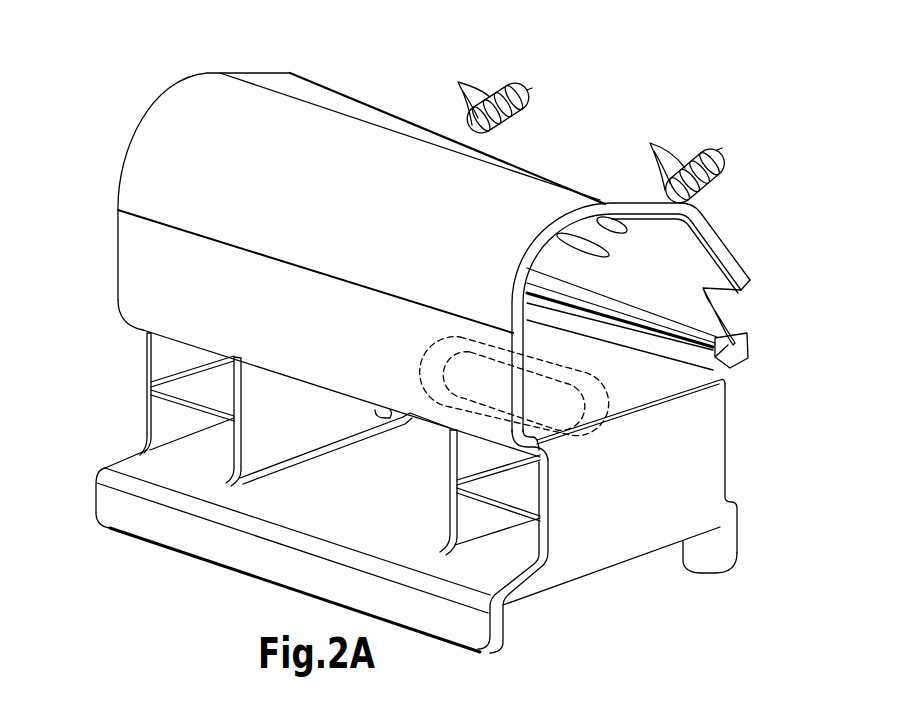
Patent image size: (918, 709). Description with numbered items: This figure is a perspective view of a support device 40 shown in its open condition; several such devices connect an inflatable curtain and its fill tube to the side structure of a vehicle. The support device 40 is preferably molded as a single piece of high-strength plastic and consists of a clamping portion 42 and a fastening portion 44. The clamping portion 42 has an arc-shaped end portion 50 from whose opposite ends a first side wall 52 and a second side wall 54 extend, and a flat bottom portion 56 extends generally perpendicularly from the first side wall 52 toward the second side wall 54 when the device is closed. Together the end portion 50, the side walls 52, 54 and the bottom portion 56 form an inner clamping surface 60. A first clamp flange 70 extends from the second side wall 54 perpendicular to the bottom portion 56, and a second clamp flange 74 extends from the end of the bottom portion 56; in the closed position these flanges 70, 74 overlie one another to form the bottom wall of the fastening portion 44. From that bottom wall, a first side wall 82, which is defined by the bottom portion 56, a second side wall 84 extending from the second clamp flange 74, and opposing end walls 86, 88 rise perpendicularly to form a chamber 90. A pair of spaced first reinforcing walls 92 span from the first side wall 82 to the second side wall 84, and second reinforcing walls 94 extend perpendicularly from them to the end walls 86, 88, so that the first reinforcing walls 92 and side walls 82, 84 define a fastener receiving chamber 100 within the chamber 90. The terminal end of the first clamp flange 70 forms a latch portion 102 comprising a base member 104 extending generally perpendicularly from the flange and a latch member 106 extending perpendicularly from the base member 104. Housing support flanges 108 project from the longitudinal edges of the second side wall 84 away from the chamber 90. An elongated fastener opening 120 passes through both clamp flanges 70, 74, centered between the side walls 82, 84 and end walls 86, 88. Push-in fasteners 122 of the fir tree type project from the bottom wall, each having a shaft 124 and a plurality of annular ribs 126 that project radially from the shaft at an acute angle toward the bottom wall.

The support device 40 is at (321, 299).
The clamping portion 42 is at (658, 304).
The fastening portion 44 is at (431, 531).
The arc-shaped end portion 50 is at (300, 120).
The first side wall 52 is at (143, 287).
The second side wall 54 is at (532, 167).
The flat bottom portion 56 is at (648, 382).
The inner clamping surface 60 is at (575, 223).
The first clamp flange 70 is at (677, 243).
The second clamp flange 74 is at (727, 423).
The first side wall 82 is at (600, 373).
The second side wall 84 is at (100, 515).
The first end wall 86 is at (620, 523).
The second end wall 88 is at (147, 363).
The chamber 90 is at (265, 495).
The first reinforcing walls 92 is at (243, 397).
The second reinforcing walls 94 is at (187, 400).
The fastener receiving chamber 100 is at (300, 510).
The latch portion 102 is at (770, 358).
The base member 104 is at (752, 357).
The latch member 106 is at (737, 362).
The housing support flanges 108 is at (730, 545).
The fastener opening 120 is at (433, 377).
The push-in fasteners 122 is at (596, 107).
The shaft 124 is at (527, 90).
The annular ribs 126 is at (559, 122).